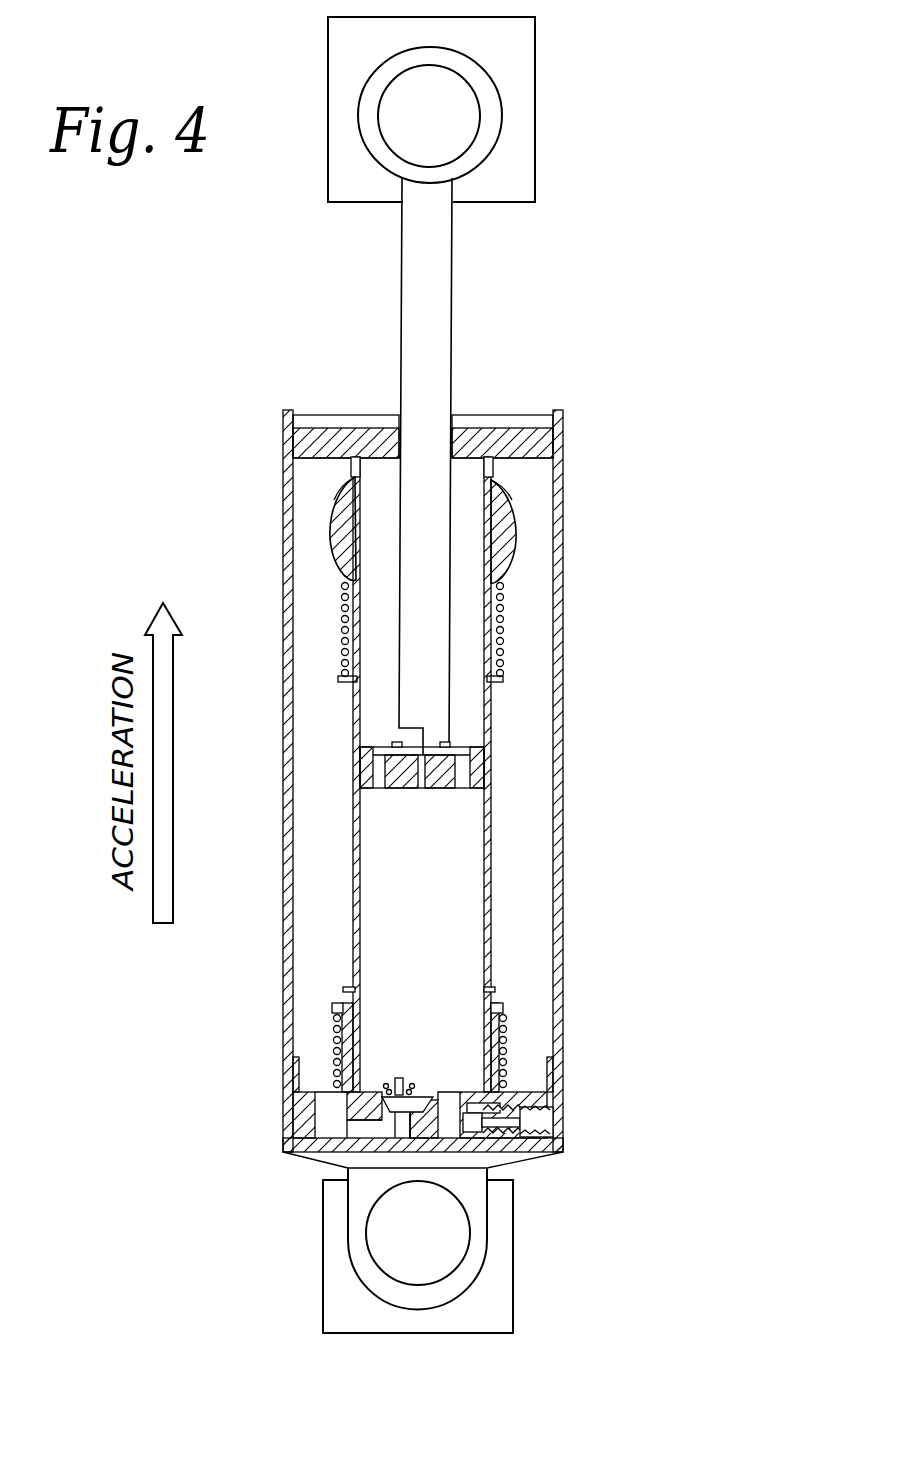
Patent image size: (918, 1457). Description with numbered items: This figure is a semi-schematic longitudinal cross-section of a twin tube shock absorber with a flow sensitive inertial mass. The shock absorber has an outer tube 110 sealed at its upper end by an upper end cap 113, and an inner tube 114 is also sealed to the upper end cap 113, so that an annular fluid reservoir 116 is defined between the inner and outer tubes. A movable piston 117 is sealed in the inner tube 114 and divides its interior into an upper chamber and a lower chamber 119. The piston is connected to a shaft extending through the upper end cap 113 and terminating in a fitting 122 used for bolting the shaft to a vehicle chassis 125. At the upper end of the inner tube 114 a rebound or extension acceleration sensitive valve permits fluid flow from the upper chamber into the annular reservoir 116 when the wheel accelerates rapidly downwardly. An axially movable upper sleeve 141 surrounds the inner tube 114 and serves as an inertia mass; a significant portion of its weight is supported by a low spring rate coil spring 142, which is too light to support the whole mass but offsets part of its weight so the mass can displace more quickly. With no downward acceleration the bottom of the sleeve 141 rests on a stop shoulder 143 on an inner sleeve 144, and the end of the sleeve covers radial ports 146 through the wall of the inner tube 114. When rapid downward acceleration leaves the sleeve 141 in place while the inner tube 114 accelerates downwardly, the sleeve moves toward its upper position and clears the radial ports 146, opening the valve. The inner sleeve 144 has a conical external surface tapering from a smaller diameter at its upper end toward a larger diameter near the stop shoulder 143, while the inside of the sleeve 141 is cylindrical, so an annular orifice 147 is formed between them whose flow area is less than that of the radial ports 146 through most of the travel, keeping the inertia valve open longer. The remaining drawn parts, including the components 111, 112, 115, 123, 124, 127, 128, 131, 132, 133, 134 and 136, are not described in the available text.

The outer tube 110 is at (562, 830).
The base end cap 111 is at (297, 1117).
The lower mounting eye 112 is at (481, 1253).
The upper end cap 113 is at (497, 415).
The inner tube 114 is at (491, 910).
The wheel mounting bracket 115 is at (332, 1245).
The annular fluid reservoir 116 is at (532, 957).
The piston 117 is at (478, 772).
The lower chamber 119 is at (470, 978).
The fitting 122 is at (486, 160).
The piston rod 123 is at (422, 788).
The piston valve 124 is at (378, 746).
The vehicle chassis 125 is at (520, 76).
The base valve 127 is at (420, 1078).
The adjusting screw 128 is at (463, 1102).
The valve stem 131 is at (332, 1010).
The valve spring 132 is at (505, 1052).
The valve sleeve 133 is at (495, 990).
The valve spring 134 is at (332, 1043).
The valve sleeve 136 is at (346, 1040).
The upper sleeve 141 is at (337, 532).
The coil spring 142 is at (503, 614).
The stop shoulder 143 is at (503, 642).
The inner sleeve 144 is at (520, 520).
The radial ports 146 is at (490, 483).
The annular orifice 147 is at (340, 480).